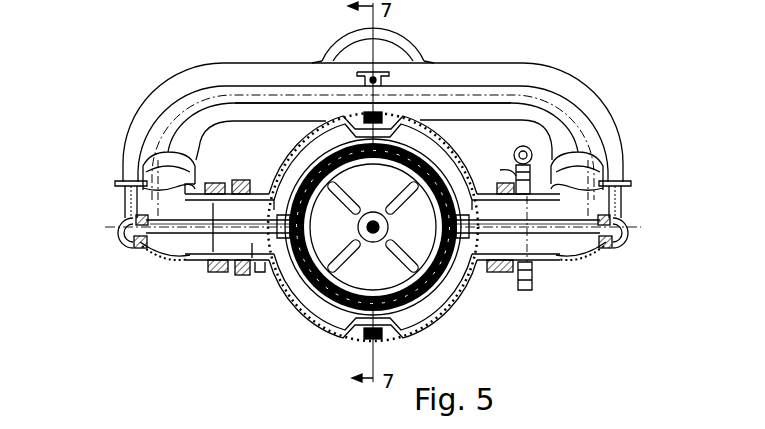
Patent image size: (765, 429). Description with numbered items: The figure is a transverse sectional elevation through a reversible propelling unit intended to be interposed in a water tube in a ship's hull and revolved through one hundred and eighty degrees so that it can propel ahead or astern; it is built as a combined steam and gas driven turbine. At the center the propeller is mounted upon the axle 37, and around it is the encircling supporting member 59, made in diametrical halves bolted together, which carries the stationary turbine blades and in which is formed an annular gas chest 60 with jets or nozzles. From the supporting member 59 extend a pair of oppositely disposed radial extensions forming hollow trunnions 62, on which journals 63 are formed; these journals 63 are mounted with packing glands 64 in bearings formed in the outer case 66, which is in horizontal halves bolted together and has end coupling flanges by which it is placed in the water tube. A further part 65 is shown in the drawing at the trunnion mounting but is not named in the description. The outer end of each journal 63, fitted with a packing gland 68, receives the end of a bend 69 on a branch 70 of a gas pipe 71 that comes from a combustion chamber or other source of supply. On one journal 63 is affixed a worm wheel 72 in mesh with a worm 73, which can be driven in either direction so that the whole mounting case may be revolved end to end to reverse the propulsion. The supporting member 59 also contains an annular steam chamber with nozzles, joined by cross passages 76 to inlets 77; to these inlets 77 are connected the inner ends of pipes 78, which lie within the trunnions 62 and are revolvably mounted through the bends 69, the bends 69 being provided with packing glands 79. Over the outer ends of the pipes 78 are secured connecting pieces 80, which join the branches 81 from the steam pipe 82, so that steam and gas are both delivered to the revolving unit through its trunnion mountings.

The axle 37 is at (382, 225).
The encircling supporting member 59 is at (320, 332).
The annular gas chest 60 is at (440, 303).
The hollow trunnions 62 is at (252, 262).
The journals 63 is at (212, 275).
The packing glands 64 is at (232, 276).
The bolt 65 is at (262, 276).
The outer case 66 is at (295, 322).
The packing gland 68 is at (200, 265).
The bend 69 is at (185, 243).
The branch 70 is at (183, 129).
The gas pipe 71 is at (386, 54).
The worm wheel 72 is at (527, 292).
The worm 73 is at (514, 156).
The cross passages 76 is at (480, 277).
The inlets 77 is at (466, 224).
The pipes 78 is at (533, 234).
The packing glands 79 is at (128, 247).
The connecting pieces 80 is at (124, 203).
The branches 81 is at (212, 91).
The steam pipe 82 is at (359, 76).